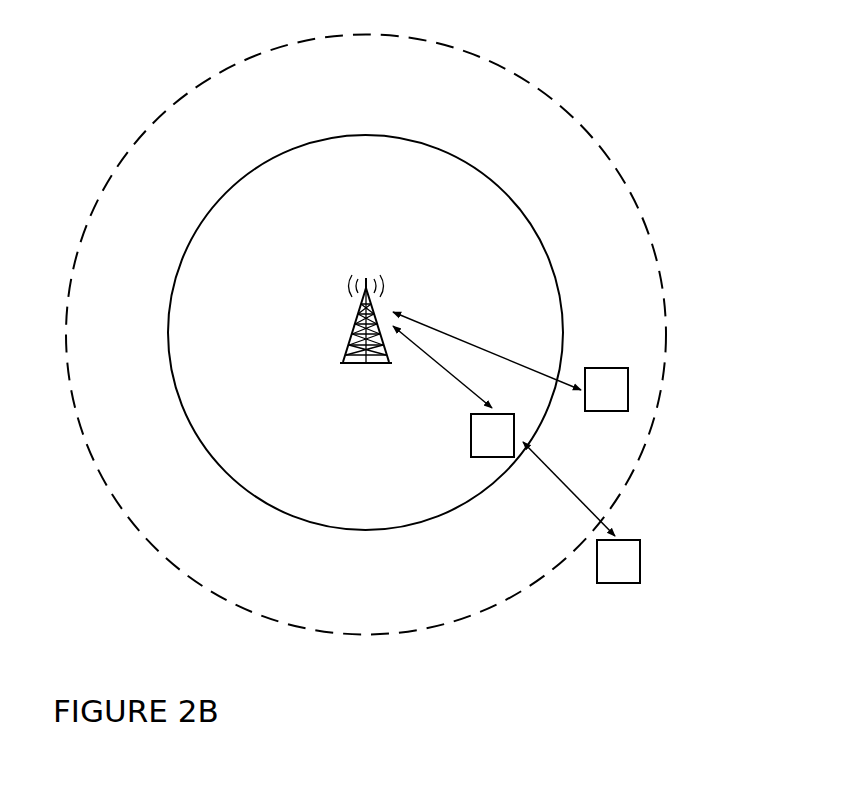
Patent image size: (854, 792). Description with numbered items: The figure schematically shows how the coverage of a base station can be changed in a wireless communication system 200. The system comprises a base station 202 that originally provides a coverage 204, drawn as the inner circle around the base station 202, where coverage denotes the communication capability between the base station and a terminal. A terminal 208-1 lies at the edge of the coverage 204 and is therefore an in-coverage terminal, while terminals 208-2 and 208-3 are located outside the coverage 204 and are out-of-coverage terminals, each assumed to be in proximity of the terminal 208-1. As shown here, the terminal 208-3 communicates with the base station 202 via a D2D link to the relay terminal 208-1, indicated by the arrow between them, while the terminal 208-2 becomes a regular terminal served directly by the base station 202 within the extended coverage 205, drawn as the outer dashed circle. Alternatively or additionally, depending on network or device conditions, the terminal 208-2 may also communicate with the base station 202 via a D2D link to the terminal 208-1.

The wireless communication system 200 is at (170, 72).
The base station 202 is at (352, 338).
The coverage 204 is at (468, 165).
The extended coverage 205 is at (525, 80).
The terminal 208-1 is at (470, 443).
The terminal 208-2 is at (628, 387).
The terminal 208-3 is at (667, 538).